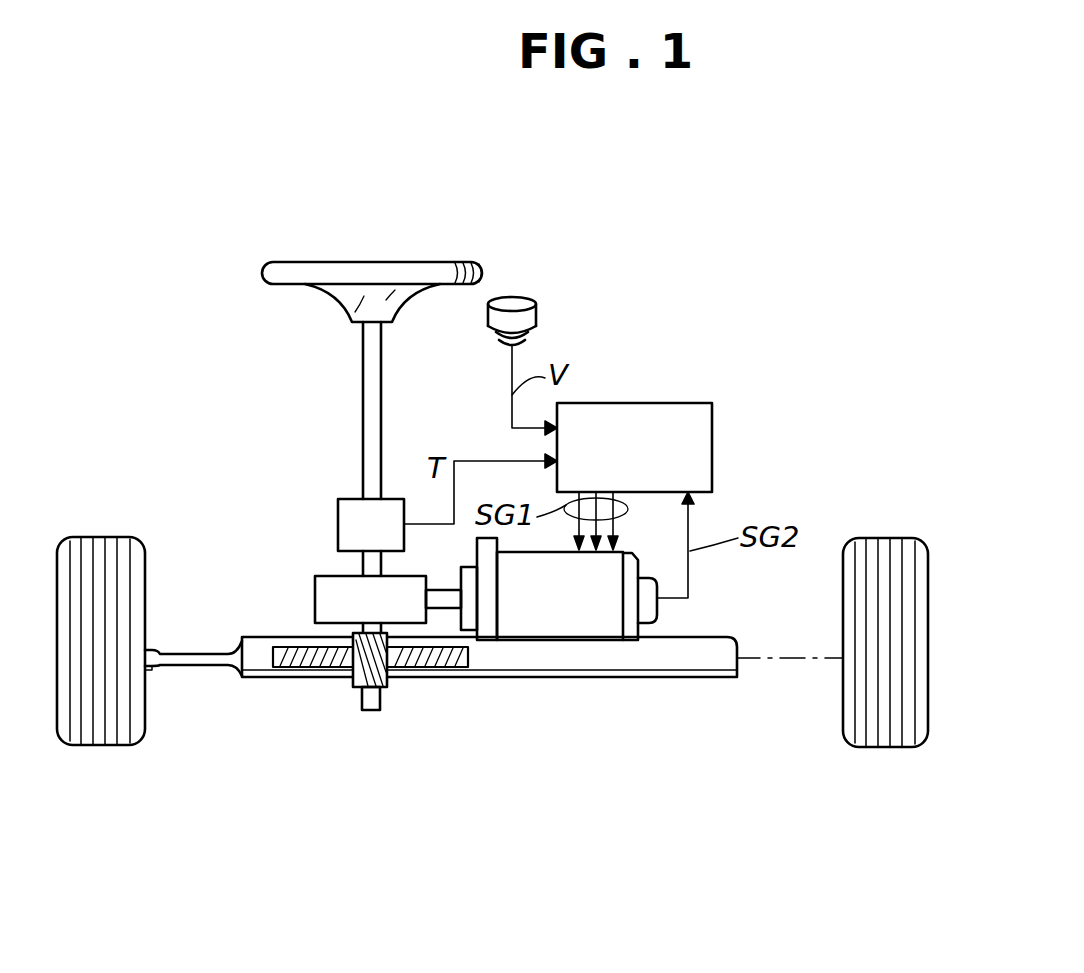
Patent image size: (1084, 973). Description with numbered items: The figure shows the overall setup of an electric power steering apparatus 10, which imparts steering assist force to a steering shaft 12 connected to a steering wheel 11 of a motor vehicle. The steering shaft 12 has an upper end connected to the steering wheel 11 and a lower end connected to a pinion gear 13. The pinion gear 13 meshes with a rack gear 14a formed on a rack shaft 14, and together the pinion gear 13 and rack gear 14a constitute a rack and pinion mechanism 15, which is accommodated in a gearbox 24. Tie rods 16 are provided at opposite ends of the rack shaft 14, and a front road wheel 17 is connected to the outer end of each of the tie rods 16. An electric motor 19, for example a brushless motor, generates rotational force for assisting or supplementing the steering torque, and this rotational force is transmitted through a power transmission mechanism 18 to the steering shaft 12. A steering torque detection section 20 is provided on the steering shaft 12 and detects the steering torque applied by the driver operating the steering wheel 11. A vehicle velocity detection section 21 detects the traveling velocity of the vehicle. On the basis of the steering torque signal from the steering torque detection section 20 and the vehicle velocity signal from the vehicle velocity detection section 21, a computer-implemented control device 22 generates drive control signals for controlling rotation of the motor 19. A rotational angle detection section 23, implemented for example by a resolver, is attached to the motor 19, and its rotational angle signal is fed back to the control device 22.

The electric power steering apparatus 10 is at (358, 212).
The steering wheel 11 is at (405, 262).
The steering shaft 12 is at (362, 398).
The pinion gear 13 is at (390, 682).
The rack shaft 14 is at (707, 657).
The rack gear 14a is at (300, 670).
The rack and pinion mechanism 15 is at (350, 690).
The tie rods 16 is at (195, 665).
The front road wheel 17 is at (97, 548).
The power transmission mechanism 18 is at (315, 598).
The electric motor 19 is at (597, 622).
The steering torque detection section 20 is at (338, 524).
The vehicle velocity detection section 21 is at (530, 300).
The control device 22 is at (650, 403).
The rotational angle detection section 23 is at (657, 608).
The gearbox 24 is at (430, 680).